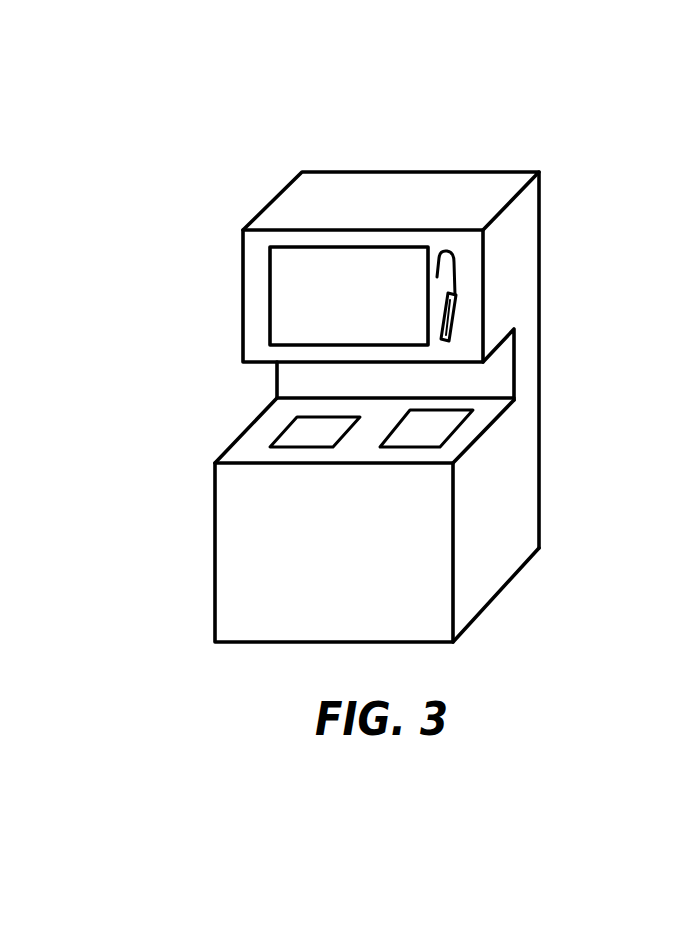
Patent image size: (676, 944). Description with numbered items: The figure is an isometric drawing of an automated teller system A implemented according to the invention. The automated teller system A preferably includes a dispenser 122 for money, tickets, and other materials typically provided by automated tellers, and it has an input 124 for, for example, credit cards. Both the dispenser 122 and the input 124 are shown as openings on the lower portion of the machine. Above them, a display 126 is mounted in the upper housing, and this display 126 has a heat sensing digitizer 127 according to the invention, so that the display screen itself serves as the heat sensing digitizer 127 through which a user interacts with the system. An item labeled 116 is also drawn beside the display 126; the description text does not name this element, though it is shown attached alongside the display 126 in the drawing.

The automated teller system A is at (487, 172).
The display 126 is at (316, 247).
The heat sensing digitizer 127 is at (373, 309).
The stylus 116 is at (455, 313).
The dispenser 122 is at (302, 438).
The input 124 is at (440, 431).